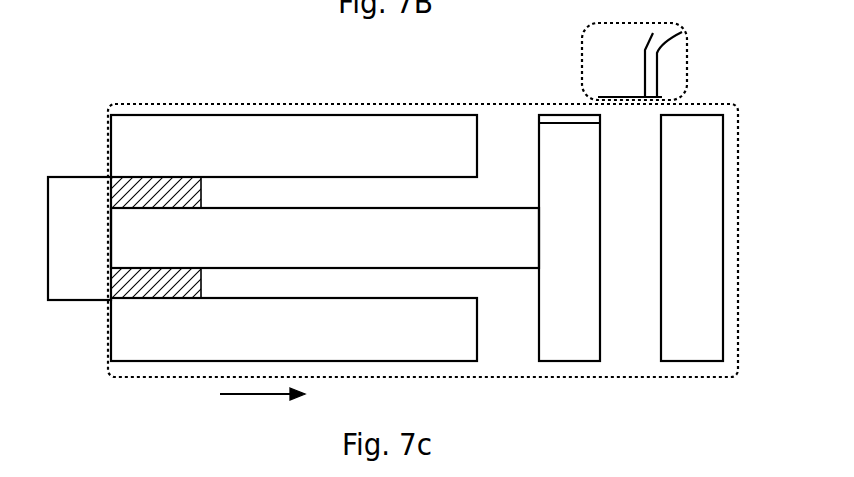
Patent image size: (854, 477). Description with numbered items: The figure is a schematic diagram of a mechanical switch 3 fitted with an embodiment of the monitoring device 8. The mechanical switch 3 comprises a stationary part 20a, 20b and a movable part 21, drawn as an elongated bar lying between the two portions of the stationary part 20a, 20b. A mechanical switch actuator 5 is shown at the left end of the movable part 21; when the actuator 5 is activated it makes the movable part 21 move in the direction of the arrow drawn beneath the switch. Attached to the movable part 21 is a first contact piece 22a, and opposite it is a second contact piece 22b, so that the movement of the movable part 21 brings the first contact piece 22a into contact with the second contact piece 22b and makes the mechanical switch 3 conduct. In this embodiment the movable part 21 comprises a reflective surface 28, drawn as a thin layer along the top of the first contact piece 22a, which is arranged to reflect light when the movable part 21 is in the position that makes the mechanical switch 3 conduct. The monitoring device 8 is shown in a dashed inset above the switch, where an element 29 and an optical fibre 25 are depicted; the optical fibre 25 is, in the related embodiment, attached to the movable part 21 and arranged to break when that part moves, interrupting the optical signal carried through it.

The mechanical switch 3 is at (277, 104).
The mechanical switch actuator 5 is at (86, 248).
The monitoring device 8 is at (668, 24).
The stationary part 20a is at (317, 158).
The stationary part 20b is at (317, 342).
The movable part 21 is at (337, 248).
The first contact piece 22a is at (592, 250).
The second contact piece 22b is at (715, 250).
The optical fibre 25 is at (658, 53).
The reflective surface 28 is at (540, 117).
The contact pin 29 is at (609, 97).